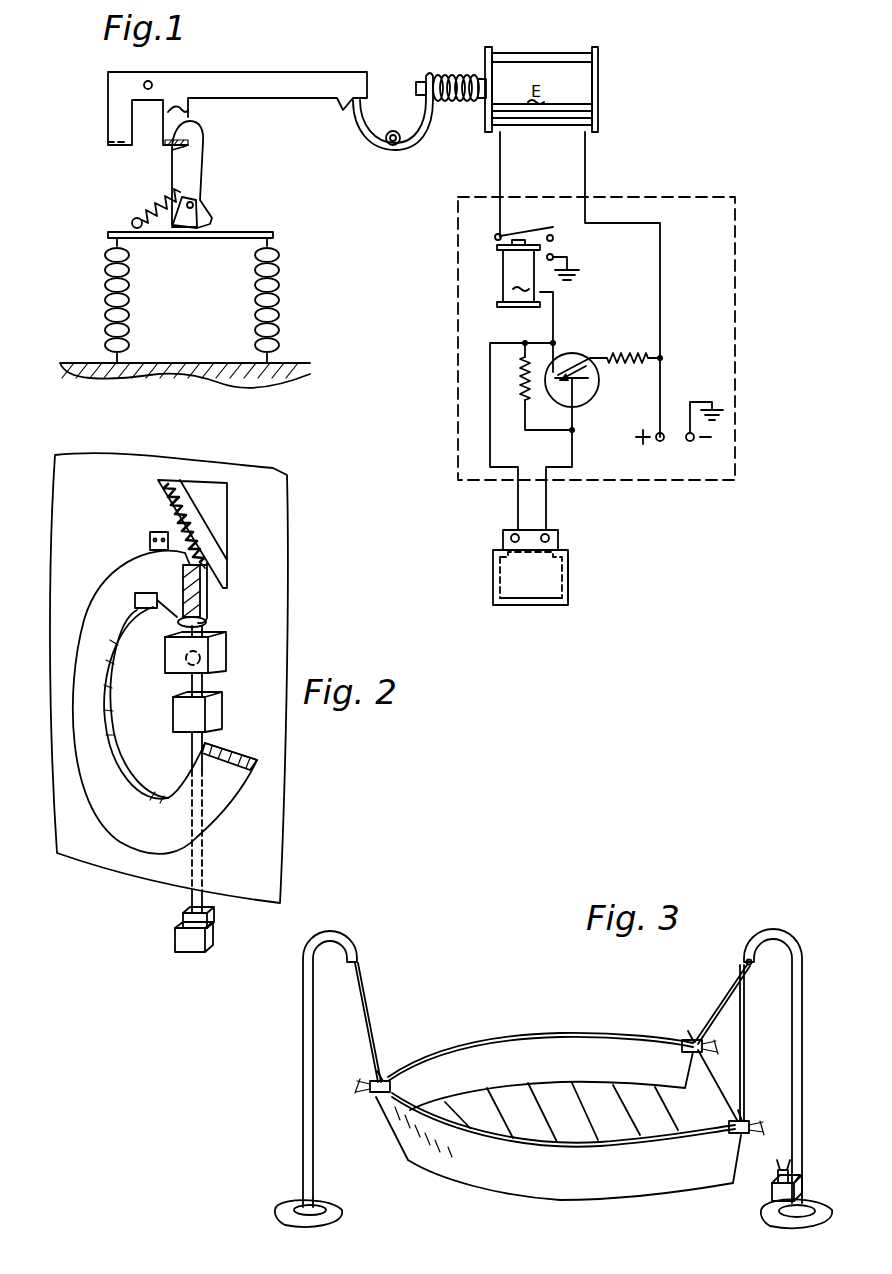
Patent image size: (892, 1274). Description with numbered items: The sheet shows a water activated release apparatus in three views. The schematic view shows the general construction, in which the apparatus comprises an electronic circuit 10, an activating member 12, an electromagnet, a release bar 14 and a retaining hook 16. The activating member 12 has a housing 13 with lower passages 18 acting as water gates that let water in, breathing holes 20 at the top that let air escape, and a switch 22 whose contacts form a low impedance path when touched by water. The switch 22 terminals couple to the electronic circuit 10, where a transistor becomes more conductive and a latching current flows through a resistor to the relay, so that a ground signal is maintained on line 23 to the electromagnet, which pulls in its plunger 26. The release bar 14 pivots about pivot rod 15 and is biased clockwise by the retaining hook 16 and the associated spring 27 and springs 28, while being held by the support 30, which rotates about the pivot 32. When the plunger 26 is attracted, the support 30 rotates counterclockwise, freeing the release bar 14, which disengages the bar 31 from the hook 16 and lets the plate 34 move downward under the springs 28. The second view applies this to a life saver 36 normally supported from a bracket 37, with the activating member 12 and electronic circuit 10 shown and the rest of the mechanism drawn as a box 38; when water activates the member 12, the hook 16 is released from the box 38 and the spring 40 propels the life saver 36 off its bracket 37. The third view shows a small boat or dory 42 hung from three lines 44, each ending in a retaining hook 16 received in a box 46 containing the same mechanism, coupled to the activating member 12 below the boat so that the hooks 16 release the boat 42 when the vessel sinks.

In FIG. 1, the electronic circuit 10 is at (736, 263).
In FIG. 2, the electronic circuit 10 is at (222, 706).
In FIG. 1, the activating member 12 is at (492, 586).
In FIG. 2, the activating member 12 is at (172, 931).
In FIG. 3, the activating member 12 is at (769, 1197).
In FIG. 1, the housing 13 is at (570, 588).
In FIG. 1, the release bar 14 is at (260, 82).
In FIG. 1, the pivot rod 15 is at (152, 82).
In FIG. 1, the retaining hook 16 is at (199, 165).
In FIG. 2, the retaining hook 16 is at (205, 628).
In FIG. 3, the retaining hook 16 is at (382, 1078).
In FIG. 1, the lower passages 18 is at (557, 603).
In FIG. 1, the breathing holes 20 is at (496, 560).
In FIG. 1, the switch 22 is at (503, 532).
In FIG. 1, the line 23 is at (497, 169).
In FIG. 1, the plunger 26 is at (478, 75).
In FIG. 1, the spring 27 is at (151, 201).
In FIG. 1, the springs 28 is at (246, 304).
In FIG. 1, the support 30 is at (346, 119).
In FIG. 1, the bar 31 is at (165, 146).
In FIG. 1, the pivot 32 is at (396, 145).
In FIG. 1, the plate 34 is at (235, 232).
In FIG. 2, the life saver 36 is at (105, 600).
In FIG. 2, the bracket 37 is at (158, 533).
In FIG. 2, the box 38 is at (226, 659).
In FIG. 2, the spring 40 is at (185, 535).
In FIG. 3, the boat 42 is at (490, 1190).
In FIG. 3, the lines 44 is at (370, 1006).
In FIG. 3, the box 46 is at (370, 1080).